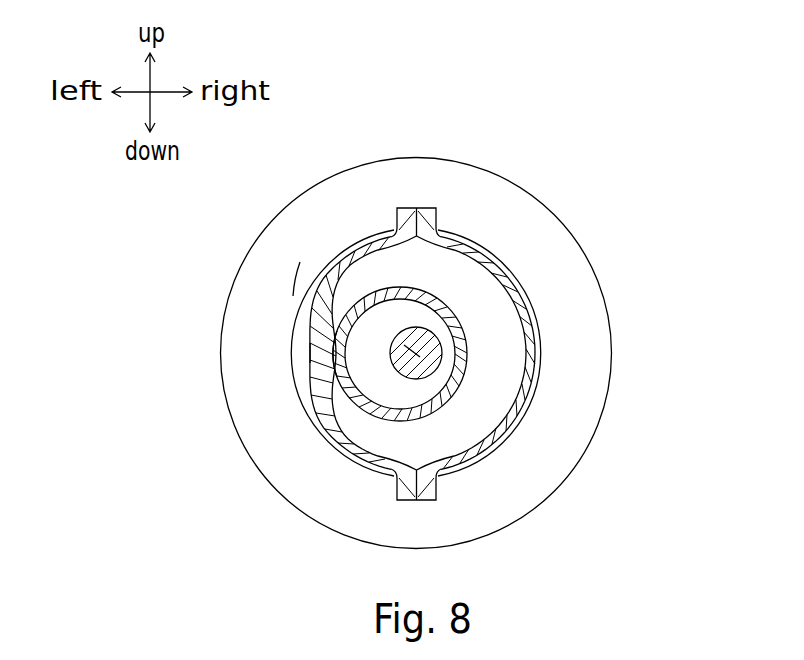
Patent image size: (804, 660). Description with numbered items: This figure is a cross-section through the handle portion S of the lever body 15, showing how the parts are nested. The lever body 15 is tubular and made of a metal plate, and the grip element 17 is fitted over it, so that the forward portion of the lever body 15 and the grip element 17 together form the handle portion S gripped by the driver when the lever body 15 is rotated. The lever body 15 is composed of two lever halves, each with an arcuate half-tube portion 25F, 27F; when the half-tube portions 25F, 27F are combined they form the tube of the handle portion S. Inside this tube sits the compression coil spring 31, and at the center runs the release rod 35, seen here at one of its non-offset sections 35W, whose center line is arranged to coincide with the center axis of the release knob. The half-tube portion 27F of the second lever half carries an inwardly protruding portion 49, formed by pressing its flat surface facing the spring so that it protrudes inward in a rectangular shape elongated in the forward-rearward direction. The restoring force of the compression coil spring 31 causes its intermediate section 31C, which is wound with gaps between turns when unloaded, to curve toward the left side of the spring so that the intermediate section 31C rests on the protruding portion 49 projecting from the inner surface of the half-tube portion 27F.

The handle portion S is at (457, 112).
The grip element 17 is at (352, 203).
The lever body 15 is at (490, 252).
The half-tube portion 25F is at (503, 280).
The half-tube portion 27F is at (329, 275).
The inwardly protruding portion 49 is at (323, 353).
The compression coil spring 31 is at (468, 333).
The intermediate section 31C is at (347, 355).
The release rod 35 is at (430, 385).
The non-offset sections 35W is at (420, 357).